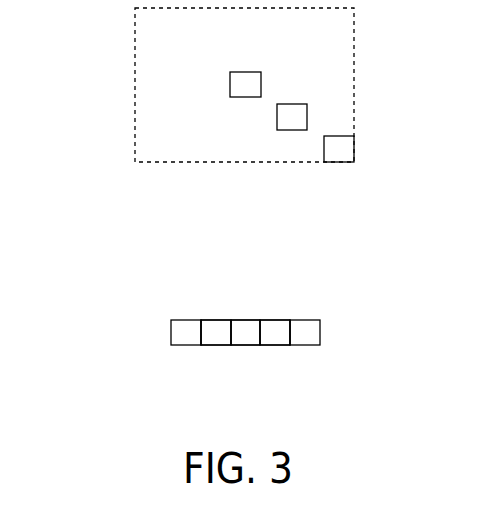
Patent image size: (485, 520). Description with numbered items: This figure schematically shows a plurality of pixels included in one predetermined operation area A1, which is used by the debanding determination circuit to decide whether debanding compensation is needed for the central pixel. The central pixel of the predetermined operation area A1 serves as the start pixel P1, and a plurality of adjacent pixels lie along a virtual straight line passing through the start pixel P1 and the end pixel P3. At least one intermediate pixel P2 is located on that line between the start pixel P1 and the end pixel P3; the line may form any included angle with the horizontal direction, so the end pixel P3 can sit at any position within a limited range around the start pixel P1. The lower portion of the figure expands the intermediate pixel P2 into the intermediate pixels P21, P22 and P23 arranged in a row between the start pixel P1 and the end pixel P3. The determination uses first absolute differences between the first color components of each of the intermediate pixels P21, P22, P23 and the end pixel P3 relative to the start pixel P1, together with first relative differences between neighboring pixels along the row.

The predetermined operation area A1 is at (134, 83).
The start pixel P1 is at (243, 85).
The intermediate pixel P2 is at (293, 117).
The end pixel P3 is at (340, 148).
The intermediate pixel P21 is at (212, 332).
The intermediate pixel P22 is at (245, 332).
The intermediate pixel P23 is at (273, 332).